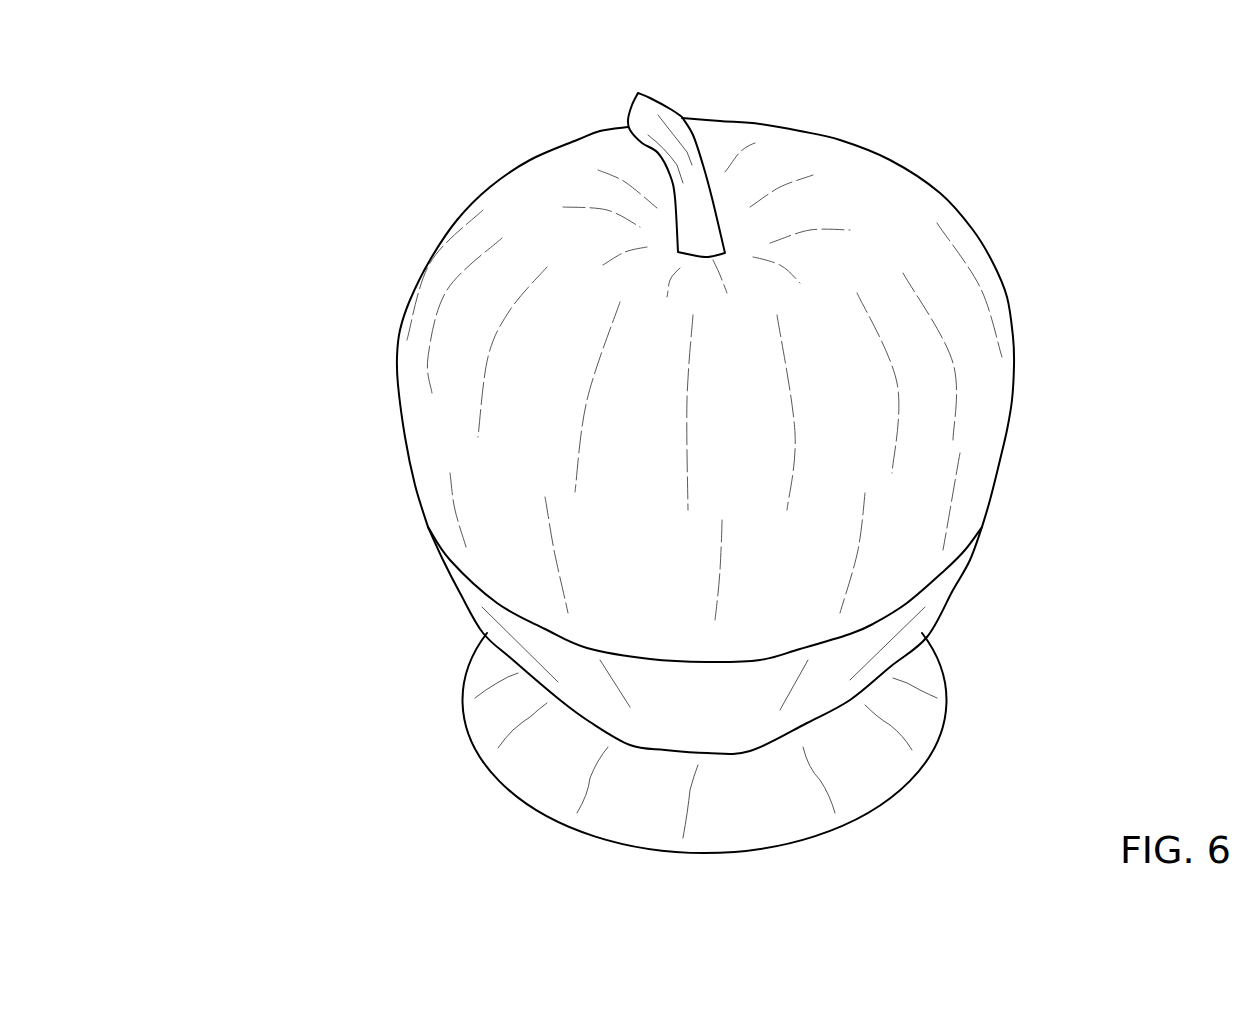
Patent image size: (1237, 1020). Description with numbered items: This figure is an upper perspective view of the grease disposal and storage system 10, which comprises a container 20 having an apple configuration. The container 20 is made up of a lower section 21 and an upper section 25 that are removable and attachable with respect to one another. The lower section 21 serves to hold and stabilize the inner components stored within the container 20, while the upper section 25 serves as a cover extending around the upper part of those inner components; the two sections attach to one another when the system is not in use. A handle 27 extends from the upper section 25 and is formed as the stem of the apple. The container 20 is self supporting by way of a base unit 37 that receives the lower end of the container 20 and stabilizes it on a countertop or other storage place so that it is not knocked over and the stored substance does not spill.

The grease disposal and storage system 10 is at (247, 202).
The container 20 is at (405, 438).
The lower section 21 is at (450, 584).
The upper section 25 is at (1037, 400).
The handle 27 is at (668, 108).
The base unit 37 is at (547, 777).